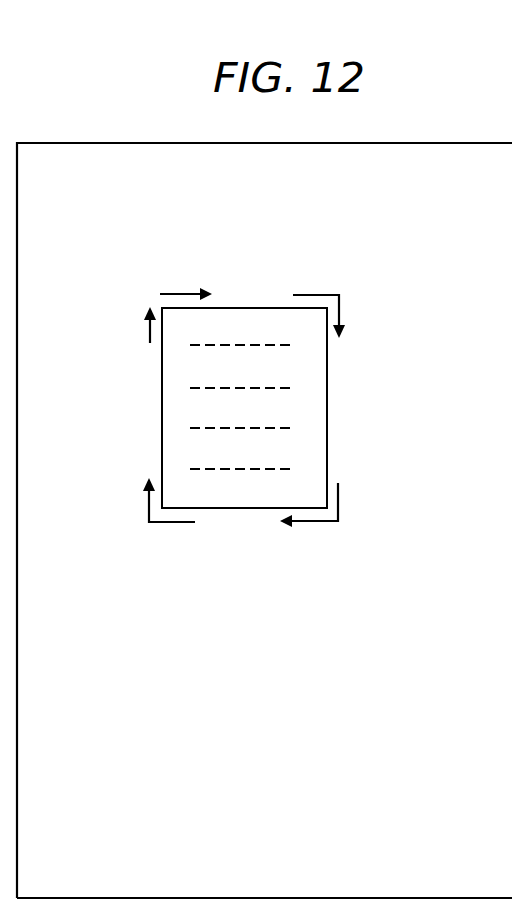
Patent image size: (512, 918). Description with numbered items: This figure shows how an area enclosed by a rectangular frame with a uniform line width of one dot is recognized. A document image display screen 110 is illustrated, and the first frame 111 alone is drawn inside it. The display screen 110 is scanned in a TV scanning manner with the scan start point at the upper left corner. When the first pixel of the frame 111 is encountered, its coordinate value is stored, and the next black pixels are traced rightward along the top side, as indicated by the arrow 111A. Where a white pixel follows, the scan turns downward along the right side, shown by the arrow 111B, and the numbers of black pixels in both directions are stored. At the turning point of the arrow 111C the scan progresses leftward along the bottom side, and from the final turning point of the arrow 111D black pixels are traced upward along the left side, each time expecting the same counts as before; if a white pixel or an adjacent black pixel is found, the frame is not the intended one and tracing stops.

The document image display screen 110 is at (310, 143).
The #1 frame 111 is at (250, 308).
The arrow 111A is at (175, 294).
The arrow 111B is at (339, 300).
The arrow 111C is at (338, 500).
The arrow 111D is at (168, 522).